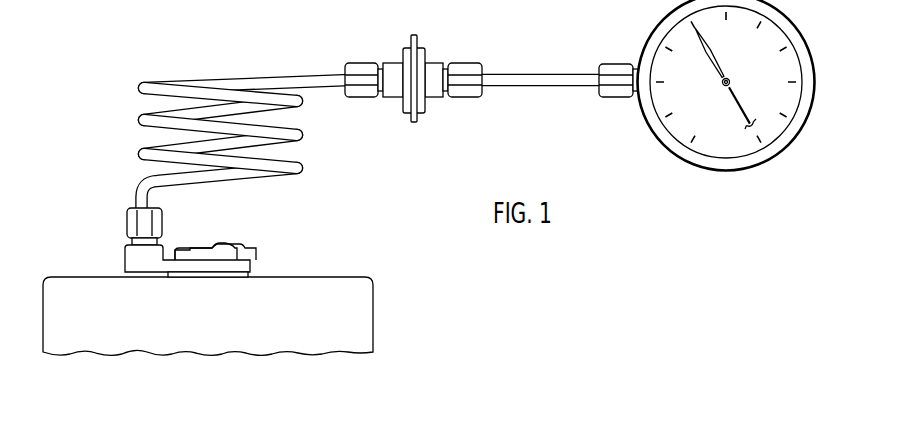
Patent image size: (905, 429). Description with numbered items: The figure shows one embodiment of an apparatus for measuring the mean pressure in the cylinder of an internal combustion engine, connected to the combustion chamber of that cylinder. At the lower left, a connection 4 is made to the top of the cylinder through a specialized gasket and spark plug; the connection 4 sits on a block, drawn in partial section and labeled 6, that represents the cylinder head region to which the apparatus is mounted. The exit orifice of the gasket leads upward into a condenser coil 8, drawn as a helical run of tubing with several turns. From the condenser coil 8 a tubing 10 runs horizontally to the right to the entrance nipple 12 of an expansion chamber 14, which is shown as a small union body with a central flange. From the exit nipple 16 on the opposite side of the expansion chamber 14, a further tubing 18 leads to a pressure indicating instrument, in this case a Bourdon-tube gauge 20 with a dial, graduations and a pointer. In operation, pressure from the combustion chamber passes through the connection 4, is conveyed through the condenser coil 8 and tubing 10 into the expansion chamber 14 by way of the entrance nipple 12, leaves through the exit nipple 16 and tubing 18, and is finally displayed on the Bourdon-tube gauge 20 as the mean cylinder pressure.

The connection 4 is at (119, 249).
The base / mounting body 6 is at (318, 329).
The condenser coil 8 is at (136, 134).
The tubing 10 is at (308, 70).
The entrance nipple 12 is at (378, 61).
The expansion chamber 14 is at (401, 107).
The exit nipple 16 is at (448, 62).
The tubing 18 is at (556, 73).
The Bourdon-tube gauge 20 is at (650, 33).